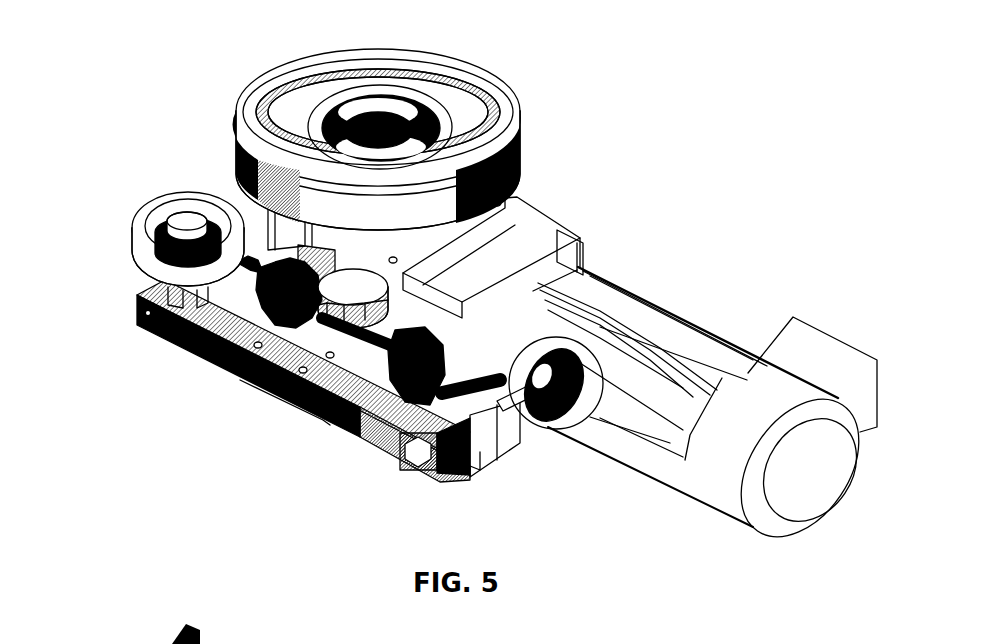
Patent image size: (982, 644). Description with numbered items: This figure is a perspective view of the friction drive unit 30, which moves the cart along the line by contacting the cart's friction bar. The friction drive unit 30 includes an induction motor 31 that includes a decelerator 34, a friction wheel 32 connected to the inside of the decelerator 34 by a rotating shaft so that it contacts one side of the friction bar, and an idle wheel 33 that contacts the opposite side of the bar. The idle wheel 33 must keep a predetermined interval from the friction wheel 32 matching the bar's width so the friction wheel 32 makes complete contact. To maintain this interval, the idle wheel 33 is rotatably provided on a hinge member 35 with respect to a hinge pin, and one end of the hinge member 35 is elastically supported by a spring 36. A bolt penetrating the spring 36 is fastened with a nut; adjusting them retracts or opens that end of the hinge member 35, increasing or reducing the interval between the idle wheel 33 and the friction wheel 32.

The friction drive unit 30 is at (458, 296).
The induction motor 31 is at (678, 317).
The friction wheel 32 is at (520, 123).
The idle wheel 33 is at (133, 243).
The decelerator 34 is at (532, 237).
The hinge member 35 is at (323, 418).
The spring 36 is at (517, 443).